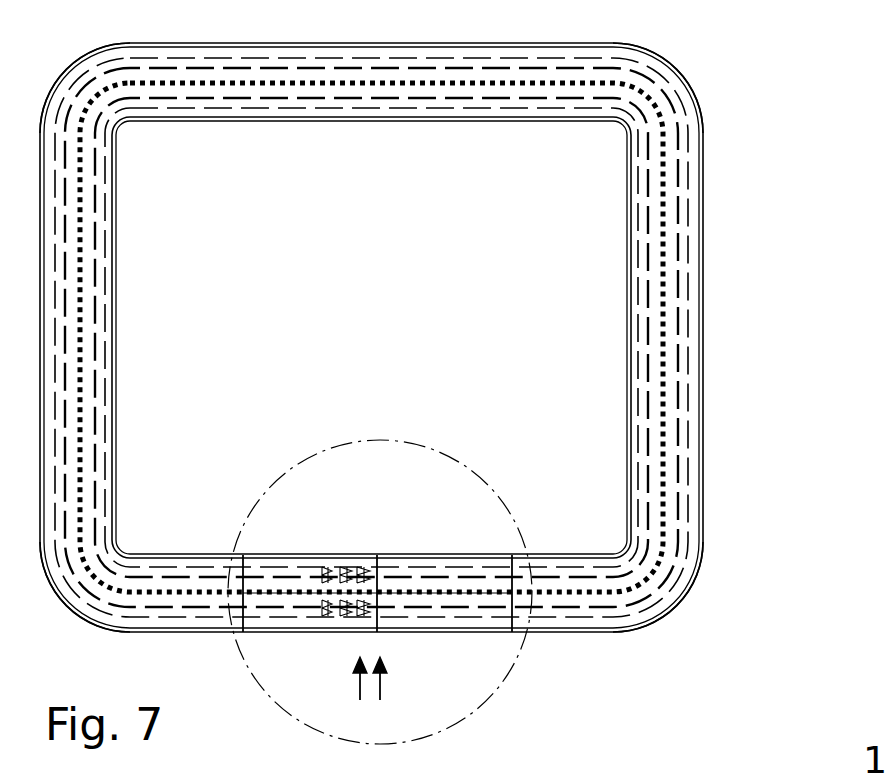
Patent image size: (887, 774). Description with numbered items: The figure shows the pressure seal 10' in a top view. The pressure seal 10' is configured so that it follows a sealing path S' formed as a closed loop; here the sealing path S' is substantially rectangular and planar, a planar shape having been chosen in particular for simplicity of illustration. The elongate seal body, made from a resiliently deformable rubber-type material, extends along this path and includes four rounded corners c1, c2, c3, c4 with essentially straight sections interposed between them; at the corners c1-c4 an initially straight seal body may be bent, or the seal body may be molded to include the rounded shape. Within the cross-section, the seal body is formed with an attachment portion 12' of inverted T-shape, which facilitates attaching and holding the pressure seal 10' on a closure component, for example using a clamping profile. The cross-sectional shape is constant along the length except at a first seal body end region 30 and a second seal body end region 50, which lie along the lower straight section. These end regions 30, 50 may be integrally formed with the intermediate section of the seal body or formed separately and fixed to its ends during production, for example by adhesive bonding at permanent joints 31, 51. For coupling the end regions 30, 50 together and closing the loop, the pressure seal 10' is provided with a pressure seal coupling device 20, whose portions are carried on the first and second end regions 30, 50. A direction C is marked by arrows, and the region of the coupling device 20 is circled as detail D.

The pressure seal 10' is at (446, 337).
The attachment portion 12' is at (433, 337).
The sealing path S' is at (458, 337).
The rounded corner c1 is at (693, 74).
The rounded corner c2 is at (70, 61).
The rounded corner c3 is at (65, 609).
The rounded corner c4 is at (683, 604).
The pressure seal coupling device 20 is at (363, 548).
The first seal body end region 30 is at (472, 528).
The permanent joint 31 is at (512, 549).
The second seal body end region 50 is at (298, 520).
The permanent joint 51 is at (243, 550).
The direction indicator C is at (392, 683).
The detail region D is at (519, 657).